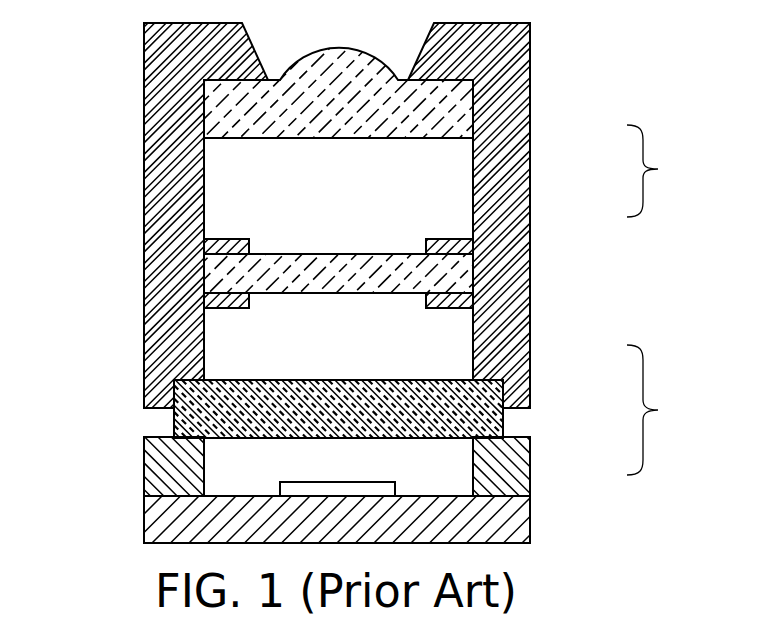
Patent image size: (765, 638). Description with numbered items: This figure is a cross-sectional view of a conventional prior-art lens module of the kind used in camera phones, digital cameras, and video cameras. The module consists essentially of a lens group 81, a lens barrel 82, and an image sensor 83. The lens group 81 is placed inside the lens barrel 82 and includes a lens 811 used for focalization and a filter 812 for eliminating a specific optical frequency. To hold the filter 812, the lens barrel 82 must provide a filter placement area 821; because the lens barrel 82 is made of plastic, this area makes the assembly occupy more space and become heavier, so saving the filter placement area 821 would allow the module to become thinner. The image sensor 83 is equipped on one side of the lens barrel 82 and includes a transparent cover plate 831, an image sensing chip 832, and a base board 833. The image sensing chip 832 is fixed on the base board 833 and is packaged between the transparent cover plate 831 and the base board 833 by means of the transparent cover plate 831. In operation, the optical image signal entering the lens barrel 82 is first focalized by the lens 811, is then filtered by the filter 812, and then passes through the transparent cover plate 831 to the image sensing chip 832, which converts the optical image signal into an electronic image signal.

The lens group 81 is at (668, 171).
The lens 811 is at (452, 115).
The filter 812 is at (452, 268).
The lens barrel 82 is at (507, 53).
The filter placement area 821 is at (222, 239).
The image sensor 83 is at (659, 410).
The transparent cover plate 831 is at (473, 398).
The image sensing chip 832 is at (395, 483).
The base board 833 is at (507, 513).